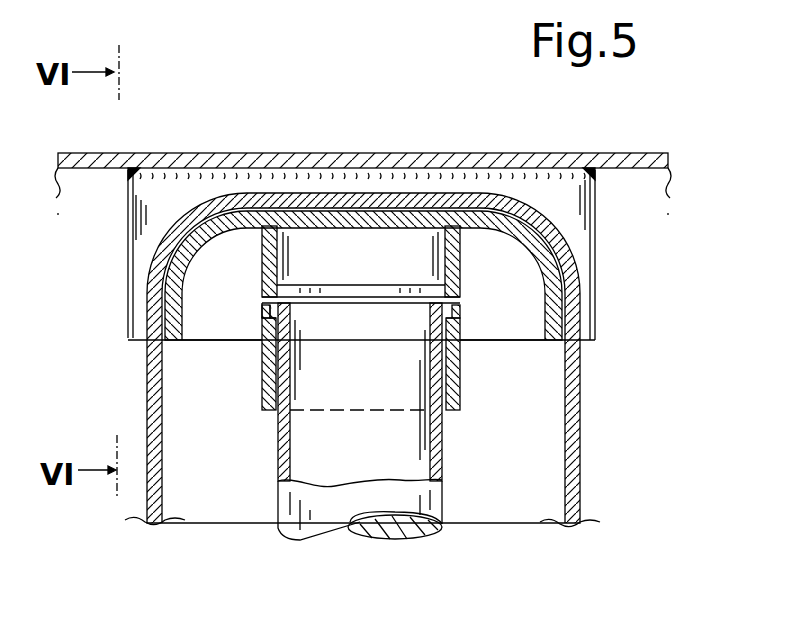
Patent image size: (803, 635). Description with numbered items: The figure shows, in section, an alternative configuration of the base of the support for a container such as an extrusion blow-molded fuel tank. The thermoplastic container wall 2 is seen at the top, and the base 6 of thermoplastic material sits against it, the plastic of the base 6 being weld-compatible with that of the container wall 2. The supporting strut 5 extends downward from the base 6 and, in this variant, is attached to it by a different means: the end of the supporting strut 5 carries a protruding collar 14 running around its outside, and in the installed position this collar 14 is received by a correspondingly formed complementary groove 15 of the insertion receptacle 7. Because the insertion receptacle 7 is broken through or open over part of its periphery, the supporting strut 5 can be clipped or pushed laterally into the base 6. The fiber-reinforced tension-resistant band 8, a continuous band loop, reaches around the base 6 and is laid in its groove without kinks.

The container wall 2 is at (640, 158).
The supporting strut 5 is at (441, 455).
The base 6 is at (592, 288).
The insertion receptacle 7 is at (457, 387).
The tension-resistant band 8 is at (576, 440).
The protruding collar 14 is at (262, 312).
The complementary groove 15 is at (455, 320).